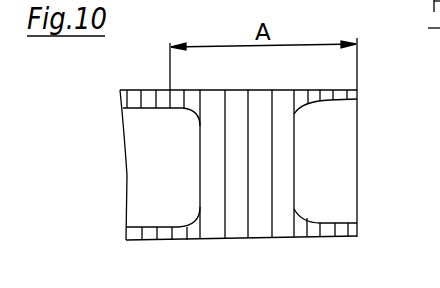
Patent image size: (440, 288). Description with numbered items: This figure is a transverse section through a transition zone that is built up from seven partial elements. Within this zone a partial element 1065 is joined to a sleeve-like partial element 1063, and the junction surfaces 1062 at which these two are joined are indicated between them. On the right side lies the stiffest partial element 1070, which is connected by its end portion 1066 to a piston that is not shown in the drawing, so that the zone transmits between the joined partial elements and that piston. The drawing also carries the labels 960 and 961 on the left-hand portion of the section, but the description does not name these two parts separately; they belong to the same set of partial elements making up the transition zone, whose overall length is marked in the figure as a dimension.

The tooth 960 is at (175, 100).
The tooth flank 961 is at (196, 111).
The junction surfaces 1062 is at (296, 212).
The sleeve-like partial element 1063 is at (337, 227).
The partial element 1065 is at (258, 227).
The end portion 1066 is at (358, 131).
The stiffest partial element 1070 is at (342, 209).